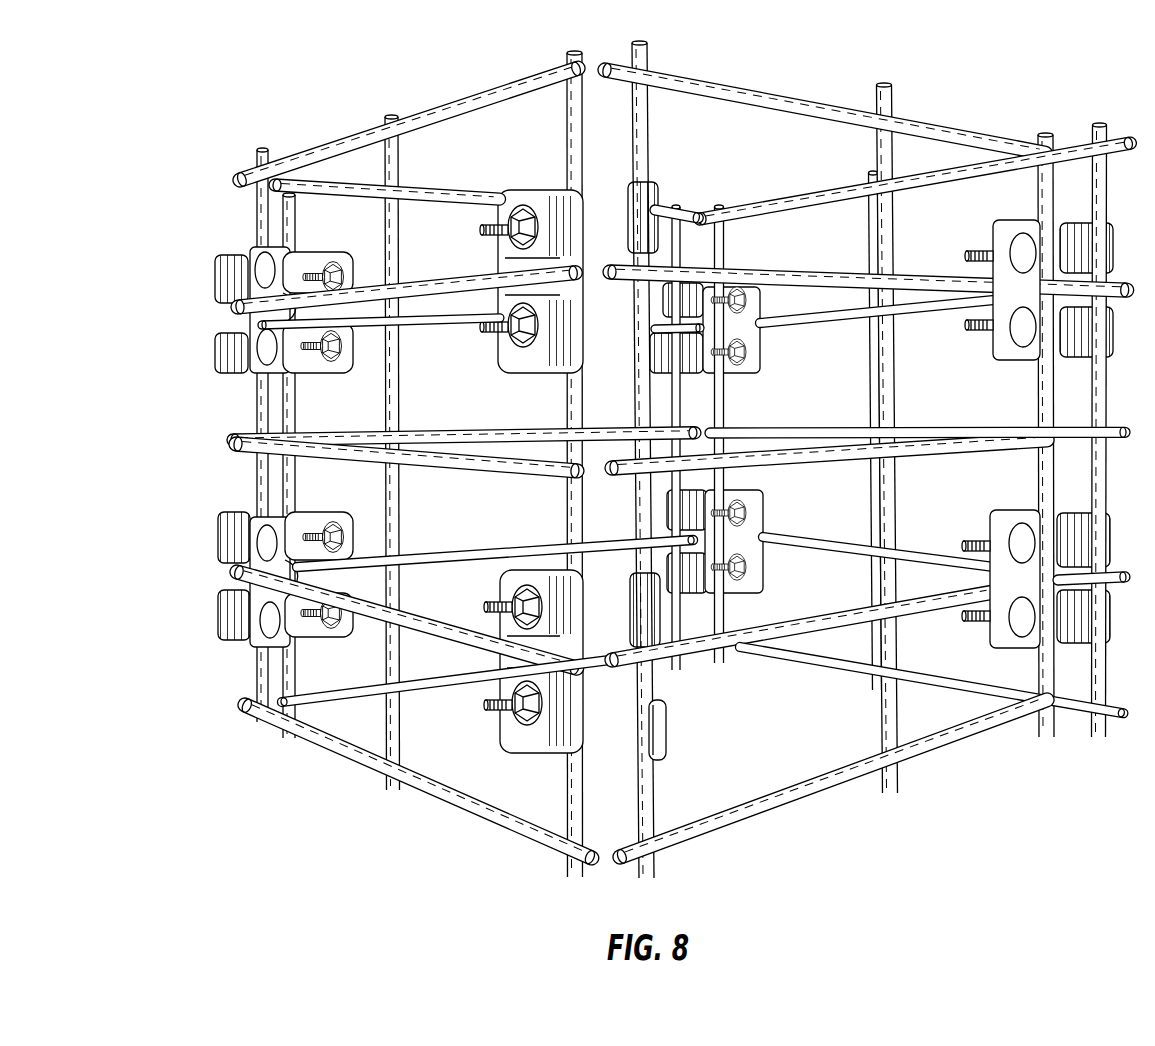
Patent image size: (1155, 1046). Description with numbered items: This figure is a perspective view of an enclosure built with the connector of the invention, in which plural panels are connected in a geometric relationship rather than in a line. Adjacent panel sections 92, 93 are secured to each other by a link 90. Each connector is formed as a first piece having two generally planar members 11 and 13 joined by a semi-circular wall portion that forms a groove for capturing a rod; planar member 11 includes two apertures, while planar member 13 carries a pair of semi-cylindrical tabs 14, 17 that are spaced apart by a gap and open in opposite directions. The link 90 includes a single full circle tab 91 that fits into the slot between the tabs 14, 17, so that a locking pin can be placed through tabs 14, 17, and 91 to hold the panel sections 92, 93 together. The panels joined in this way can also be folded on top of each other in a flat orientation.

The panel section 93 is at (460, 100).
The panel section 92 is at (457, 203).
The link 90 is at (315, 253).
The tab 14 is at (218, 532).
The full circle tab 91 is at (222, 580).
The tab 17 is at (220, 628).
The planar member 13 is at (1097, 515).
The planar member 11 is at (1045, 650).